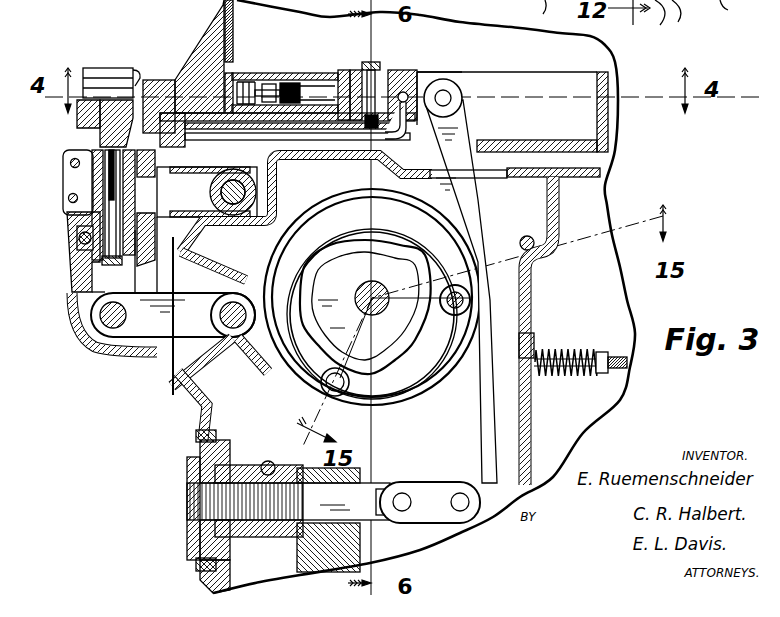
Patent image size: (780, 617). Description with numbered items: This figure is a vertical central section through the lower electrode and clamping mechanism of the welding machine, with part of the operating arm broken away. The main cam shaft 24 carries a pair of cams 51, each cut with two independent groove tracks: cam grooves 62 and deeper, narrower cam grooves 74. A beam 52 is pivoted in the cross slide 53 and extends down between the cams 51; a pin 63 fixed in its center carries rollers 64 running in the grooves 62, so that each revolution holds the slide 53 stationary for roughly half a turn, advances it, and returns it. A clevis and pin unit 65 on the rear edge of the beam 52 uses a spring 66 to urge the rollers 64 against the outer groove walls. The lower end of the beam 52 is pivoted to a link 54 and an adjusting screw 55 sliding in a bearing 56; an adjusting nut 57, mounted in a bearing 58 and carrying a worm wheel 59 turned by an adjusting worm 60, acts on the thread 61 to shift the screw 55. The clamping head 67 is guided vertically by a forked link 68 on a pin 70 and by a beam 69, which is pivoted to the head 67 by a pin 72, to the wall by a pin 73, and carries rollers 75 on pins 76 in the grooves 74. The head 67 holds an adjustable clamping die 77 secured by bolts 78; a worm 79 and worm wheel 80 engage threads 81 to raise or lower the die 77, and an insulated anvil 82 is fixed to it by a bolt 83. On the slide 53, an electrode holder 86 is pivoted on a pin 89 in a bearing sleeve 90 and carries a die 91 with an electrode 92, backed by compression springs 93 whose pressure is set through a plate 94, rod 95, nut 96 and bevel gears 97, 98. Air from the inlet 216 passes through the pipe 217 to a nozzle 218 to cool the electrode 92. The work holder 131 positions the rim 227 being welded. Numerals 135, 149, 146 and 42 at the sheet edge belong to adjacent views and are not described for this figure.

The rim 227 is at (108, 72).
The work holder 131 is at (77, 126).
The anvil 82 is at (100, 138).
The die 91 is at (151, 80).
The electrode 92 is at (205, 45).
The compression springs 93 is at (244, 70).
The nozzle 218 is at (167, 148).
The bevel gear 98 is at (297, 121).
The pipe 217 is at (343, 140).
The electrode holder 86 is at (262, 80).
The plate 94 is at (270, 75).
The rod 95 is at (290, 80).
The bevel gear 97 is at (306, 80).
The nut 96 is at (318, 78).
The pin 89 is at (372, 62).
The bearing sleeve 90 is at (400, 70).
The air inlet 216 is at (421, 78).
The clamping die 77 is at (92, 187).
The bolts 78 is at (68, 212).
The threads 81 is at (82, 288).
The worm 79 is at (77, 243).
The worm wheel 80 is at (100, 262).
The clamping head 67 is at (78, 280).
The bolt 83 is at (90, 297).
The pin 72 is at (112, 335).
The beam 69 is at (173, 315).
The pin 73 is at (205, 350).
The forked link 68 is at (207, 192).
The pin 70 is at (245, 172).
The cams 51 is at (312, 398).
The cam grooves 62 is at (372, 304).
The cam grooves 74 is at (365, 309).
The main cam shaft 24 is at (385, 290).
The rollers 64 is at (455, 286).
The pin 63 is at (461, 305).
The rollers 75 is at (350, 393).
The pins 76 is at (344, 397).
The beam 52 is at (460, 281).
The cross slide 53 is at (512, 125).
The clevis and pin unit 65 is at (530, 345).
The spring 66 is at (567, 350).
The bearing 58 is at (190, 458).
The adjusting nut 57 is at (203, 546).
The worm wheel 59 is at (262, 552).
The thread 61 is at (190, 500).
The adjusting worm 60 is at (265, 462).
The adjusting screw 55 is at (343, 494).
The bearing 56 is at (305, 550).
The link 54 is at (443, 515).
The part 135 is at (529, 7).
The part 149 is at (665, 21).
The part 146 is at (688, 15).
The part 42 is at (733, 5).